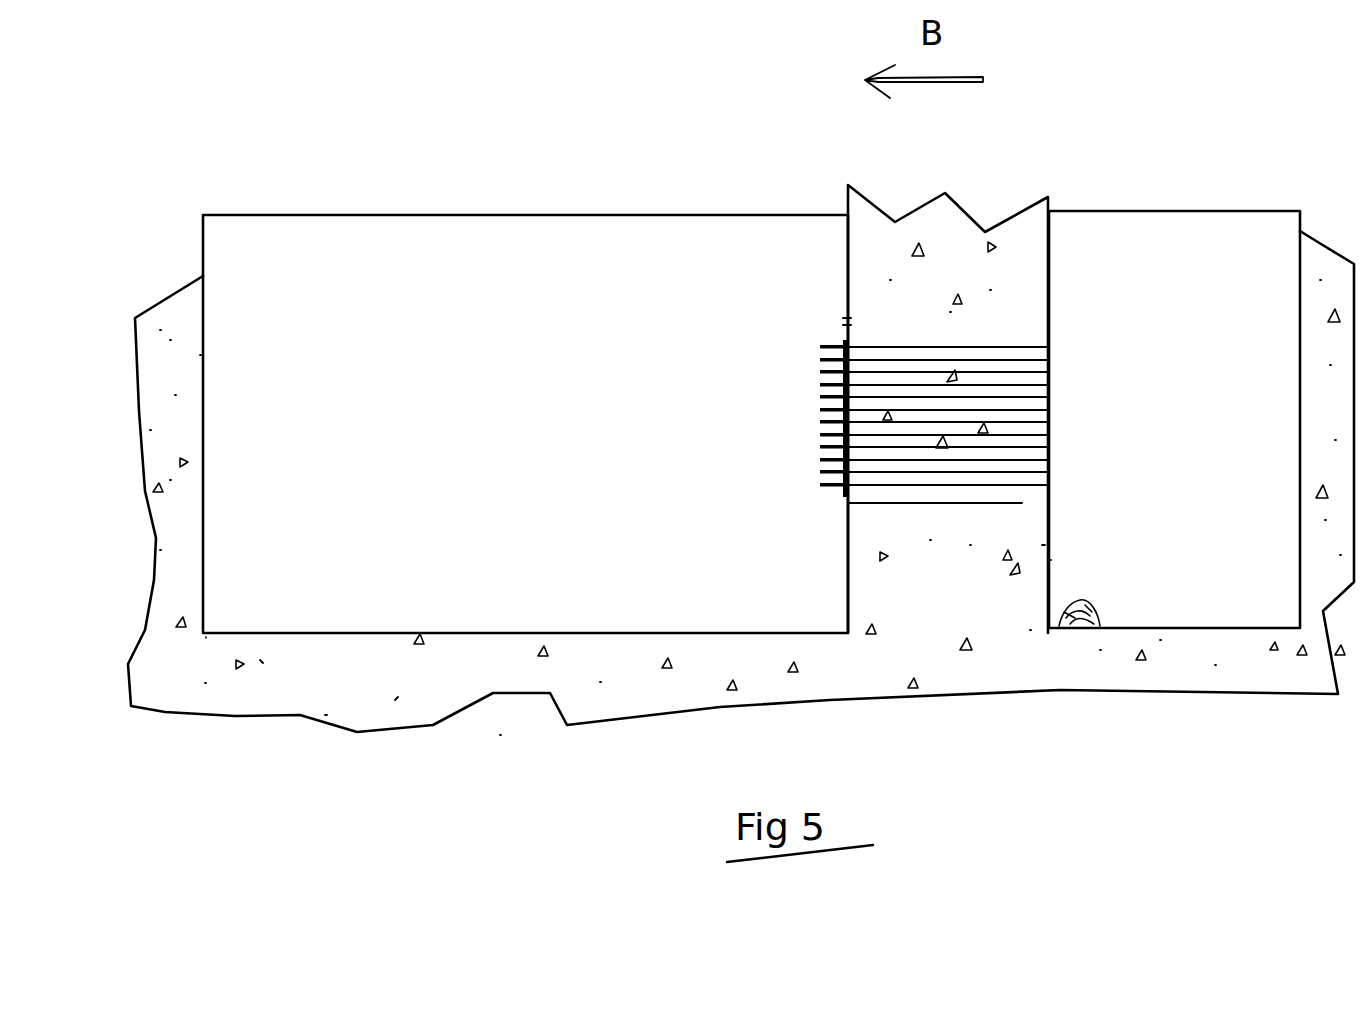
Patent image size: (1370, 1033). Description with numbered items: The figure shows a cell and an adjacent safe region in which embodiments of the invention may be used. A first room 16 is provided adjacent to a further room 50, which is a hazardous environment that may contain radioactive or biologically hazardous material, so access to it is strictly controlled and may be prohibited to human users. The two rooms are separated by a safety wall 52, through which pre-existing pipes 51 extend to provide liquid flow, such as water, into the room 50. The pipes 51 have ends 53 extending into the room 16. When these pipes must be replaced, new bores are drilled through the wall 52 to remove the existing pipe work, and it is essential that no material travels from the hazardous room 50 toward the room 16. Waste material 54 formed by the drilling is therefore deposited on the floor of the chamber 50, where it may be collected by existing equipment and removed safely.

The first room 16 is at (591, 279).
The further room 50 is at (1168, 258).
The pre-existing pipes 51 is at (963, 350).
The safety wall 52 is at (955, 598).
The pipe ends 53 is at (799, 420).
The waste material 54 is at (1111, 599).